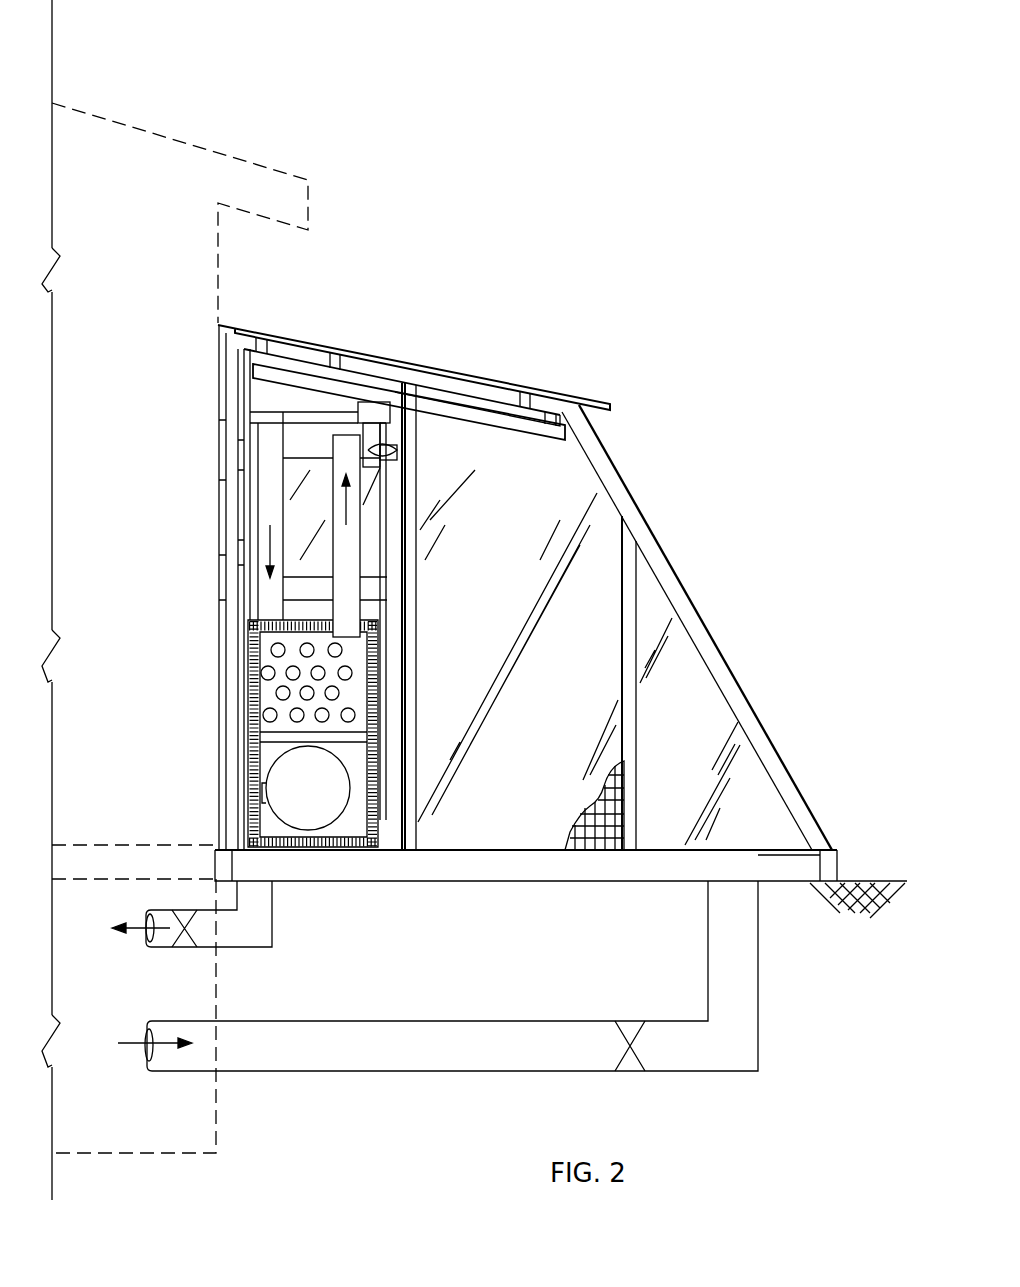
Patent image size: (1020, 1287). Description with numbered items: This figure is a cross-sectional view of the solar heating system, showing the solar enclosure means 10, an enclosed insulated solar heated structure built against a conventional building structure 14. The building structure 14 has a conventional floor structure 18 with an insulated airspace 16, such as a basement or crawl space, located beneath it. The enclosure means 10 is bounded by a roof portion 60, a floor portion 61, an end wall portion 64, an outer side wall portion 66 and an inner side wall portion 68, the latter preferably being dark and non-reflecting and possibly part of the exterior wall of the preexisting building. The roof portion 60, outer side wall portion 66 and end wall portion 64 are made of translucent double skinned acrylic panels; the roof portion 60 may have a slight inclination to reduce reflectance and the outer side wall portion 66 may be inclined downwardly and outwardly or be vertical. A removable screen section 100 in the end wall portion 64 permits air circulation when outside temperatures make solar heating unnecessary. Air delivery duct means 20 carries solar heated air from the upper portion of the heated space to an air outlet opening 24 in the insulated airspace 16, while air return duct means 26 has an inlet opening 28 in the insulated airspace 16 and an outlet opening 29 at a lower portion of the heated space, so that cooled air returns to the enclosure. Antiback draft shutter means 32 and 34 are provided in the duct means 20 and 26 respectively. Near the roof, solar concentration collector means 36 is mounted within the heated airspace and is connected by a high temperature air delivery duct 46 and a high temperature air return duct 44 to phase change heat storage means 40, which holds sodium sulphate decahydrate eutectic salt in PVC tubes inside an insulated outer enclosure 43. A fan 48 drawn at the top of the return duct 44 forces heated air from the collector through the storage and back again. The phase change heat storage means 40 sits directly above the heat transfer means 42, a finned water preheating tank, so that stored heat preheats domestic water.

The solar enclosure means 10 is at (596, 387).
The conventional building structure 14 is at (224, 151).
The insulated airspace 16 is at (198, 1113).
The conventional floor structure 18 is at (118, 843).
The air delivery duct means 20 is at (183, 948).
The air outlet opening 24 is at (150, 928).
The air return duct means 26 is at (733, 1072).
The inlet opening 28 is at (145, 1058).
The outlet opening 29 is at (720, 847).
The antiback draft shutter means 32 is at (178, 912).
The antiback draft shutter means 34 is at (628, 1062).
The solar concentration collector means 36 is at (483, 420).
The phase change heat storage means 40 is at (356, 698).
The heat transfer means 42 is at (313, 830).
The outer enclosure 43 is at (375, 657).
The high temperature air return duct 44 is at (348, 541).
The high temperature air delivery duct 46 is at (270, 487).
The fan 48 is at (398, 457).
The roof portion 60 is at (395, 358).
The floor portion 61 is at (527, 850).
The end wall portion 64 is at (676, 642).
The outer side wall portion 66 is at (742, 678).
The inner side wall portion 68 is at (223, 552).
The screen section 100 is at (584, 812).